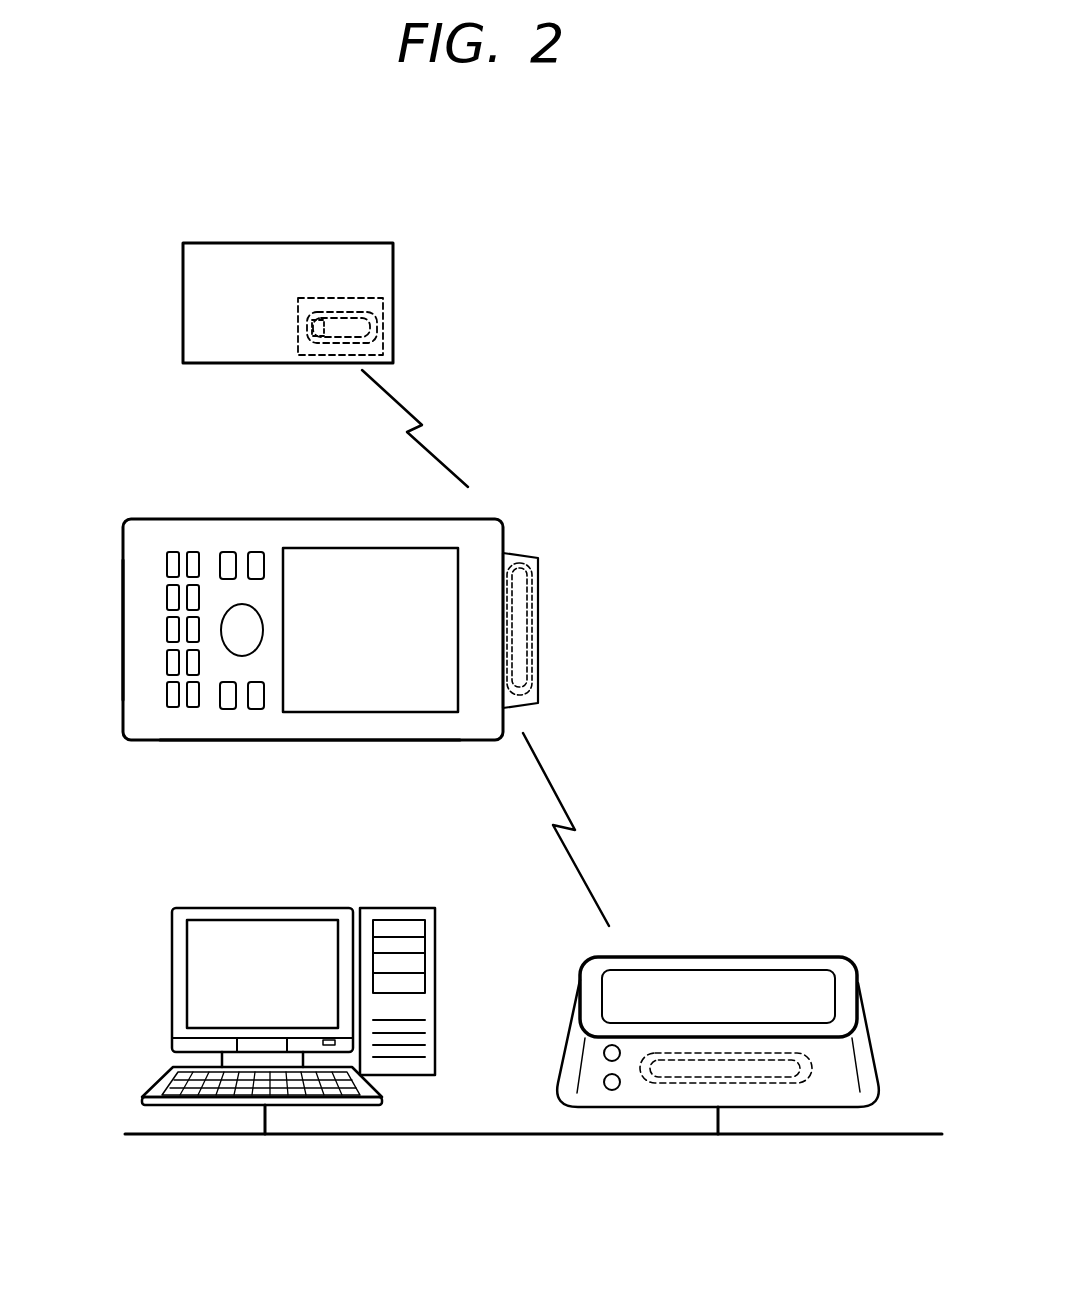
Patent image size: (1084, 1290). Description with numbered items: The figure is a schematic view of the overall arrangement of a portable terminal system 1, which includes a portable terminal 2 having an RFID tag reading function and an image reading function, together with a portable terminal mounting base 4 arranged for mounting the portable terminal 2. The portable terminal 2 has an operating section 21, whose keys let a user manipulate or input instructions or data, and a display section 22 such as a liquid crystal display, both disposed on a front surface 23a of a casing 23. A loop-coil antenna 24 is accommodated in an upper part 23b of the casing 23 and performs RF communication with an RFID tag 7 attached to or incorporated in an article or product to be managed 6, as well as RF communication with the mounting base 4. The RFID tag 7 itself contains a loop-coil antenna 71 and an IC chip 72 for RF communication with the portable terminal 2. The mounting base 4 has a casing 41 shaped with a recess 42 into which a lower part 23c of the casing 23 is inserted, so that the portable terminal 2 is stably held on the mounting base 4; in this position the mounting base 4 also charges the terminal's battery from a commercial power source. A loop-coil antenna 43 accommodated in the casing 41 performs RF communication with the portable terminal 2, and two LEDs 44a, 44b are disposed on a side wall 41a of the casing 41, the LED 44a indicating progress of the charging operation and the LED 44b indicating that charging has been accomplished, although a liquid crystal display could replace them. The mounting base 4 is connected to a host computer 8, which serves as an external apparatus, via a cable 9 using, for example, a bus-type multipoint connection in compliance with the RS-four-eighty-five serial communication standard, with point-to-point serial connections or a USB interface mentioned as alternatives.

The portable terminal system 1 is at (562, 229).
The portable terminal 2 is at (261, 497).
The portable terminal mounting base 4 is at (742, 927).
The article or product to be managed 6 is at (354, 243).
The RFID tag 7 is at (376, 299).
The host computer 8 is at (320, 897).
The cable 9 is at (420, 1137).
The operating section 21 is at (205, 720).
The display section 22 is at (378, 700).
The casing 23 is at (360, 518).
The front surface 23a is at (273, 735).
The upper part 23b is at (538, 693).
The lower part 23c is at (138, 634).
The loop-coil antenna 24 is at (531, 561).
The casing 41 is at (802, 957).
The side wall 41a is at (582, 1100).
The recess 42 is at (664, 990).
The loop-coil antenna 43 is at (812, 1057).
The LED 44a is at (603, 1052).
The LED 44b is at (603, 1081).
The loop-coil antenna 71 is at (385, 334).
The IC chip 72 is at (300, 328).